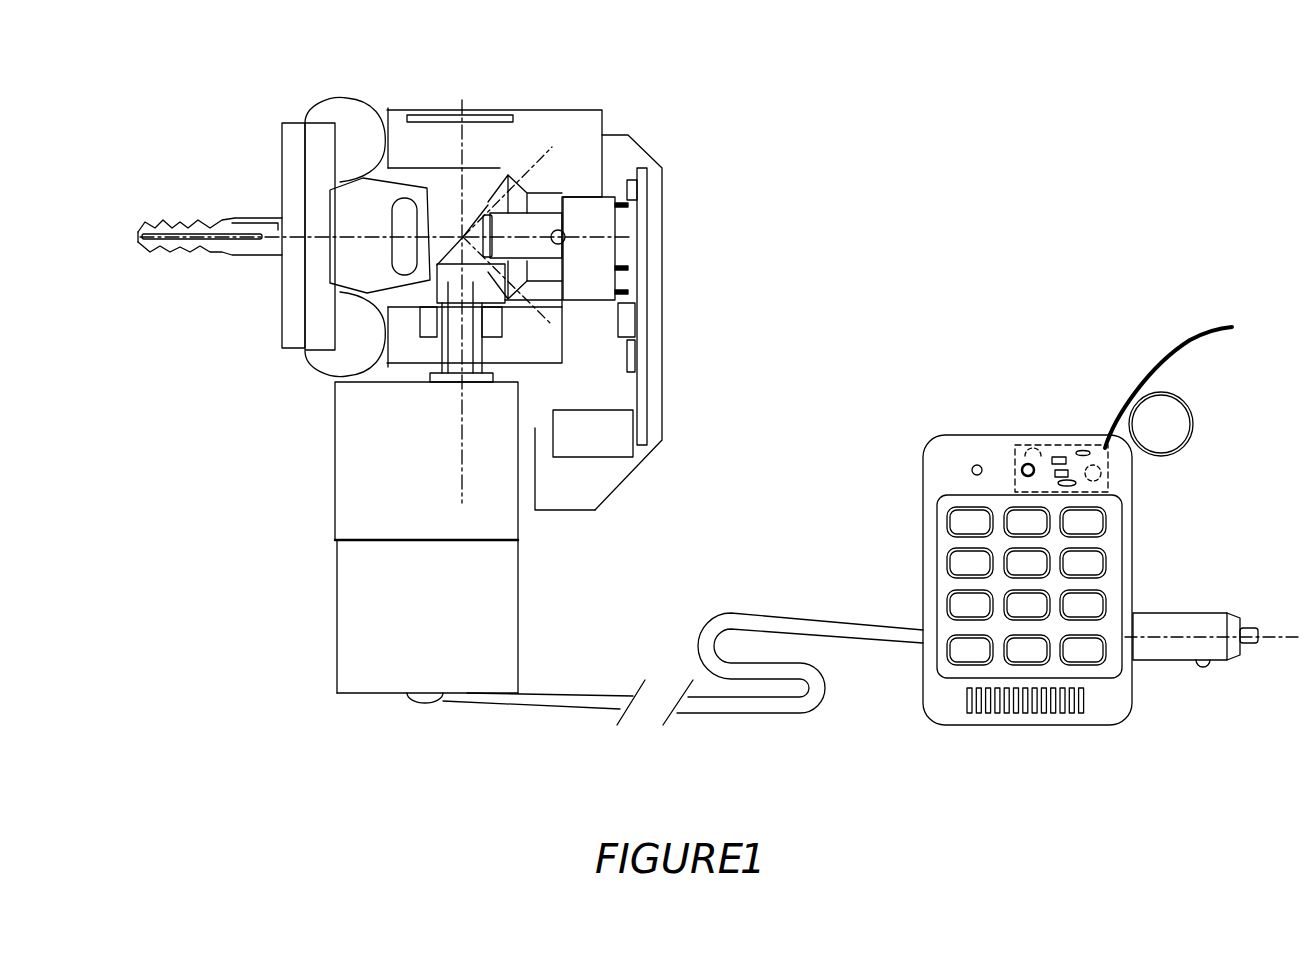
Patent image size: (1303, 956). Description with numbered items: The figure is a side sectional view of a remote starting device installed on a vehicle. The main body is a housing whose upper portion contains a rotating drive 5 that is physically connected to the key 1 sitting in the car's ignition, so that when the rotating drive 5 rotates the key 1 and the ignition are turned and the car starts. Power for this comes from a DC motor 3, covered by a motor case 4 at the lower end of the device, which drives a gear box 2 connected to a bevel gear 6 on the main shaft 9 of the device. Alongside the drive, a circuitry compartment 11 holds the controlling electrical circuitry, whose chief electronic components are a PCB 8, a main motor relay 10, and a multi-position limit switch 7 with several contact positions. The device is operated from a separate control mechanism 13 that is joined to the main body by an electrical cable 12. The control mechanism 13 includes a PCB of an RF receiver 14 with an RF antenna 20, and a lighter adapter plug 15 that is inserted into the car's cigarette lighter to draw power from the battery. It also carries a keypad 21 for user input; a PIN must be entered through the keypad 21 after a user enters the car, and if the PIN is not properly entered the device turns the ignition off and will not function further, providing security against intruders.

The key 1 is at (347, 203).
The gear box 2 is at (363, 438).
The DC motor 3 is at (397, 605).
The motor case 4 is at (335, 718).
The rotating drive 5 is at (450, 137).
The bevel gear 6 is at (508, 175).
The multi-position limit switch 7 is at (583, 208).
The PCB 8 is at (642, 193).
The main shaft 9 is at (553, 226).
The main motor relay 10 is at (622, 422).
The circuitry compartment 11 is at (602, 478).
The electrical cable 12 is at (572, 702).
The control mechanism 13 is at (983, 447).
The RF receiver 14 is at (1057, 452).
The lighter adapter plug 15 is at (1207, 623).
The RF antenna 20 is at (1185, 398).
The keypad 21 is at (1107, 545).